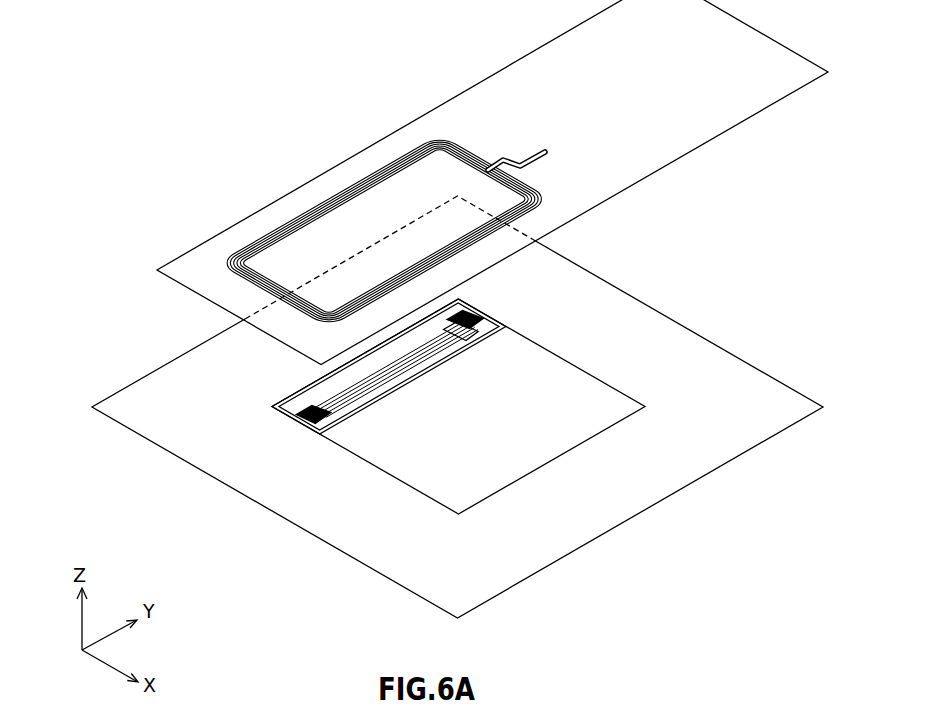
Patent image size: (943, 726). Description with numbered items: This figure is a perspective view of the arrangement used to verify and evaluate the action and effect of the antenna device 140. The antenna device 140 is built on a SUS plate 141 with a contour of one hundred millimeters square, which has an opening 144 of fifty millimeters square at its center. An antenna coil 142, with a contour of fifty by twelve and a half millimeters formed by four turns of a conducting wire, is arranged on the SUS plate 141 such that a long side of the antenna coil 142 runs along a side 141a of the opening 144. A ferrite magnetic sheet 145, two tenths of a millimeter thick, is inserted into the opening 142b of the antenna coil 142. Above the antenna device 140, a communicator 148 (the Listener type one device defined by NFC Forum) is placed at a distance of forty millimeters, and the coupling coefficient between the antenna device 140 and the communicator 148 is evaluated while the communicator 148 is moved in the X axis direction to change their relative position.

The antenna device 140 is at (468, 407).
The SUS plate 141 is at (747, 403).
The side of the opening 141a is at (290, 388).
The antenna coil 142 is at (420, 368).
The opening of the antenna coil 142b is at (445, 322).
The opening 144 is at (533, 432).
The magnetic sheet 145 is at (462, 313).
The communicator 148 is at (305, 157).